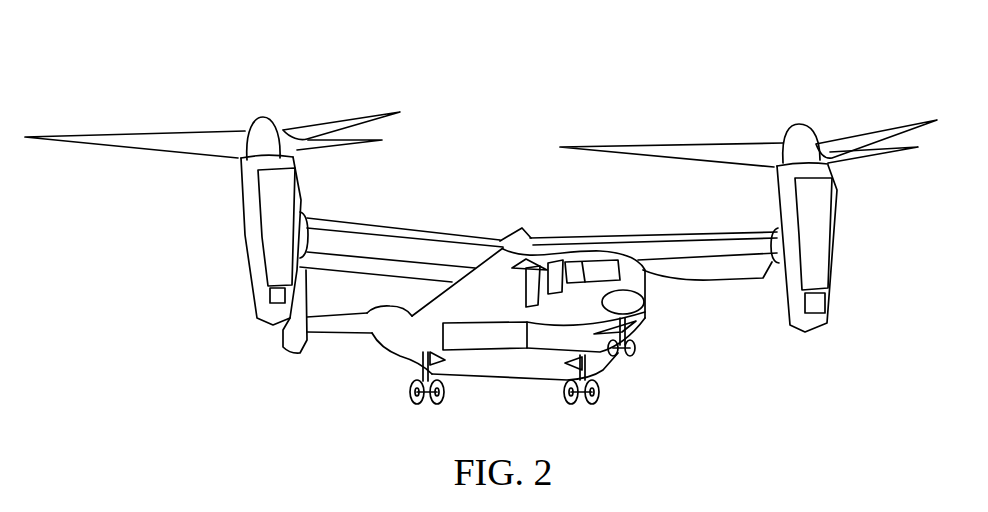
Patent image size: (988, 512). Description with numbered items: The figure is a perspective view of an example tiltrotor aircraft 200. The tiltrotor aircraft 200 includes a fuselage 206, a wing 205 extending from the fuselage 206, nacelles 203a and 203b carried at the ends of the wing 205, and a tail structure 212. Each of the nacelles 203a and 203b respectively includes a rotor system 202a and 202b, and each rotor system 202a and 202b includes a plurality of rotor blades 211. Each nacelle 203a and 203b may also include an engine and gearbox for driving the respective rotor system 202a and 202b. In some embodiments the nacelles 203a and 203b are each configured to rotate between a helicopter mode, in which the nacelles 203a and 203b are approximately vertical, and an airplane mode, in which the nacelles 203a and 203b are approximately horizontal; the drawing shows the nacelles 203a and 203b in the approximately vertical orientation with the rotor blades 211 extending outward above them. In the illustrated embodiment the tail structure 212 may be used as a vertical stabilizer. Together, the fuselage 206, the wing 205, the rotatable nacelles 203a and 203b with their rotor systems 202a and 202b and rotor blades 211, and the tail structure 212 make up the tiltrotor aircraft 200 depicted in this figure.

The tiltrotor aircraft 200 is at (576, 95).
The rotor blades 211 is at (170, 135).
The rotor system 202a is at (226, 167).
The rotor system 202b is at (847, 177).
The nacelle 203a is at (213, 229).
The nacelle 203b is at (855, 245).
The wing 205 is at (417, 229).
The fuselage 206 is at (650, 306).
The tail structure 212 is at (281, 338).